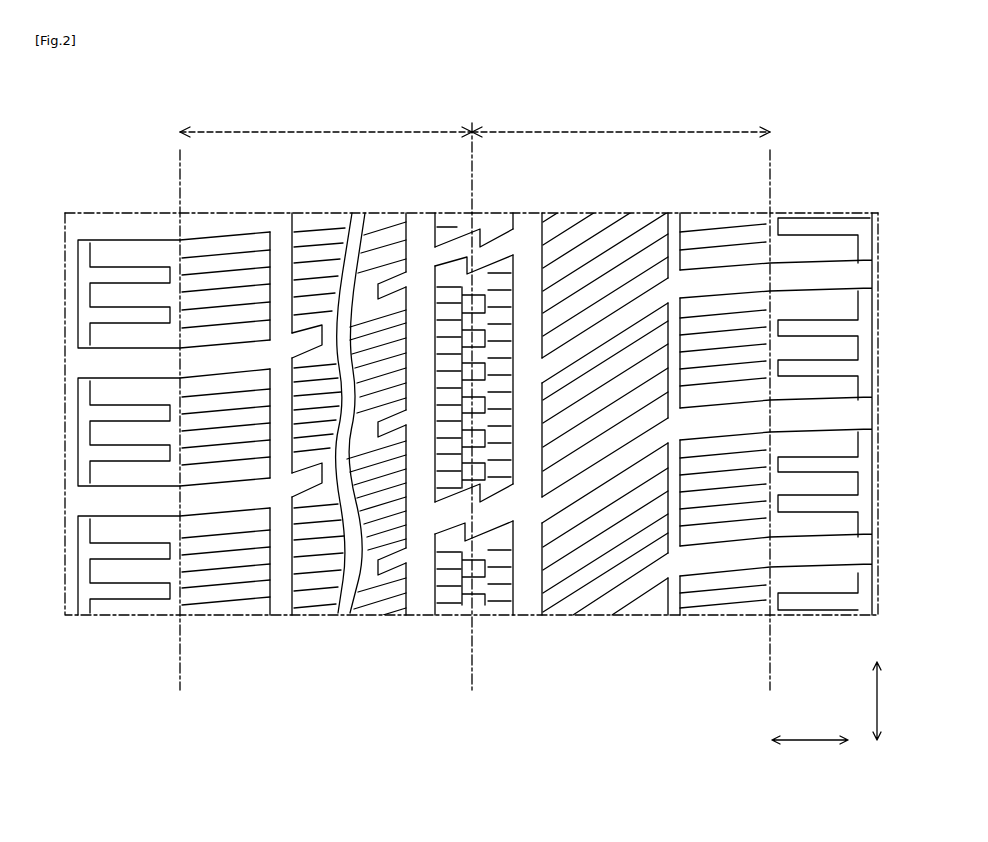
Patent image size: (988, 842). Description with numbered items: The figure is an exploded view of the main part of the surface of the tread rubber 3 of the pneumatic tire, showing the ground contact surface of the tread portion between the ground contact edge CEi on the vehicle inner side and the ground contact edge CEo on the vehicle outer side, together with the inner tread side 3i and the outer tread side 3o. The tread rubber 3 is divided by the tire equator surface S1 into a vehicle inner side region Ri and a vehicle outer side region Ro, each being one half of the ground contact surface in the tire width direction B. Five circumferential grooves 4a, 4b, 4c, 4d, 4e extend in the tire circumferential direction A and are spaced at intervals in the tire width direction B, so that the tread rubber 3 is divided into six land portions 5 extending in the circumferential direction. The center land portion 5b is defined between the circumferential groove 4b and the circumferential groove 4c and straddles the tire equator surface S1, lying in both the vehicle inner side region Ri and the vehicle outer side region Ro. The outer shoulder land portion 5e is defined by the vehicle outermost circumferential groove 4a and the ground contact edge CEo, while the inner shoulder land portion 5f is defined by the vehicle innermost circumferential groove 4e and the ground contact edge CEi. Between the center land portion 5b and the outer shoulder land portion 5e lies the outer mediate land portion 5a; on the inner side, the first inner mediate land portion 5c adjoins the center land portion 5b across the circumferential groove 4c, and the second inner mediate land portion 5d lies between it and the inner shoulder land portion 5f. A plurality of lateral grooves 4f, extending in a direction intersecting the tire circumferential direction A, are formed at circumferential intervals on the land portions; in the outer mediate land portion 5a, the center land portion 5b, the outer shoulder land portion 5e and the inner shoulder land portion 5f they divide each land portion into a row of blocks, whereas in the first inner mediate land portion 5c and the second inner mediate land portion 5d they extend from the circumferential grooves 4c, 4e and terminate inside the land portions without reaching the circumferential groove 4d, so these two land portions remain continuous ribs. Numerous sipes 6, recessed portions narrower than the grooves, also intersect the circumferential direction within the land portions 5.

The tread rubber 3 is at (865, 163).
The inner tread edge 3i is at (255, 204).
The outer tread edge 3o is at (596, 200).
The circumferential groove 4a is at (672, 213).
The circumferential groove 4b is at (528, 213).
The circumferential groove 4c is at (420, 215).
The circumferential groove 4d is at (350, 215).
The circumferential groove 4e is at (275, 211).
The lateral groove 4f is at (228, 360).
The land portion 5 is at (359, 630).
The outer mediate land portion 5a is at (543, 598).
The center land portion 5b is at (433, 600).
The first inner mediate land portion 5c is at (343, 603).
The second inner mediate land portion 5d is at (292, 605).
The outer shoulder land portion 5e is at (678, 590).
The inner shoulder land portion 5f is at (273, 557).
The sipe 6 is at (228, 213).
The tire equator surface S1 is at (472, 690).
The ground contact edge on vehicle inner side CEi is at (178, 429).
The ground contact edge on vehicle outer side CEo is at (769, 429).
The vehicle inner side region Ri is at (326, 122).
The vehicle outer side region Ro is at (621, 122).
The tire circumferential direction A is at (869, 701).
The tire width direction B is at (810, 732).